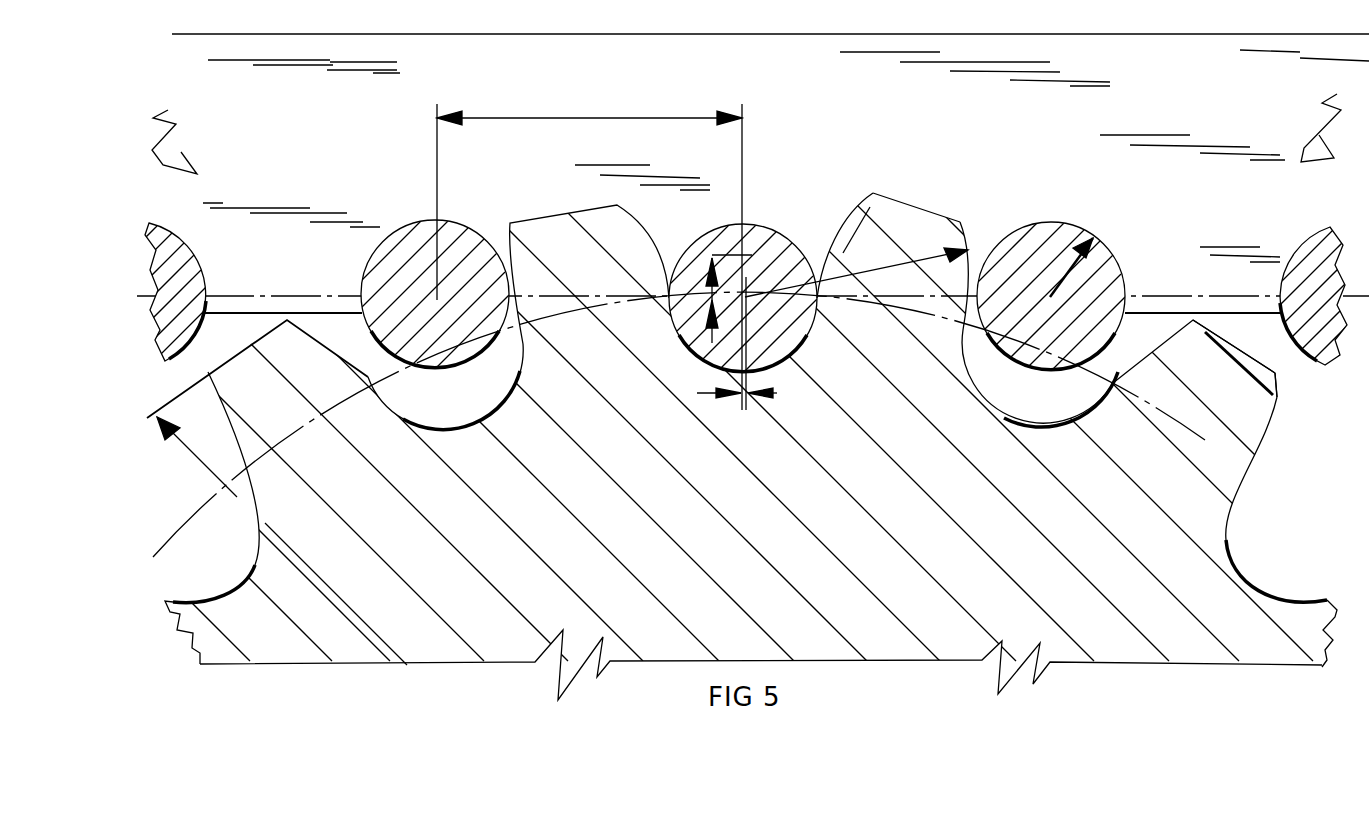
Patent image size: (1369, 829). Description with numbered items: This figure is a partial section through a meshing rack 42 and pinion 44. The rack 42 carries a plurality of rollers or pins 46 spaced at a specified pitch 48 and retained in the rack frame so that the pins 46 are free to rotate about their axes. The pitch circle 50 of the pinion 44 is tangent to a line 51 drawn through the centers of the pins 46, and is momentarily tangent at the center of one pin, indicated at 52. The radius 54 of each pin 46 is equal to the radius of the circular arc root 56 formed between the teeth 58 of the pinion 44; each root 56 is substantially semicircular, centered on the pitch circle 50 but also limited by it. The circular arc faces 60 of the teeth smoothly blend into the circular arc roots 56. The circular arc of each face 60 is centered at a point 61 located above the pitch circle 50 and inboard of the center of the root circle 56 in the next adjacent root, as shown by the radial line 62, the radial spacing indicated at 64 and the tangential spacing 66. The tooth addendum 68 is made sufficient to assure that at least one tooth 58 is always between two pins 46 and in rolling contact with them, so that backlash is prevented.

The rack 42 is at (1005, 33).
The pinion 44 is at (893, 662).
The rollers or pins 46 is at (380, 230).
The pitch 48 is at (588, 118).
The pitch circle 50 is at (186, 522).
The line through the centers of the pins 51 is at (276, 295).
The center of pin 52 is at (796, 357).
The radius of each pin 54 is at (1055, 256).
The circular arc root 56 is at (1057, 397).
The teeth 58 is at (905, 215).
The circular arc faces 60 is at (970, 232).
The center of circular arc face 61 is at (752, 293).
The radial line 62 is at (873, 194).
The radial spacing 64 is at (747, 295).
The tangential spacing 66 is at (776, 397).
The tooth addendum 68 is at (407, 667).